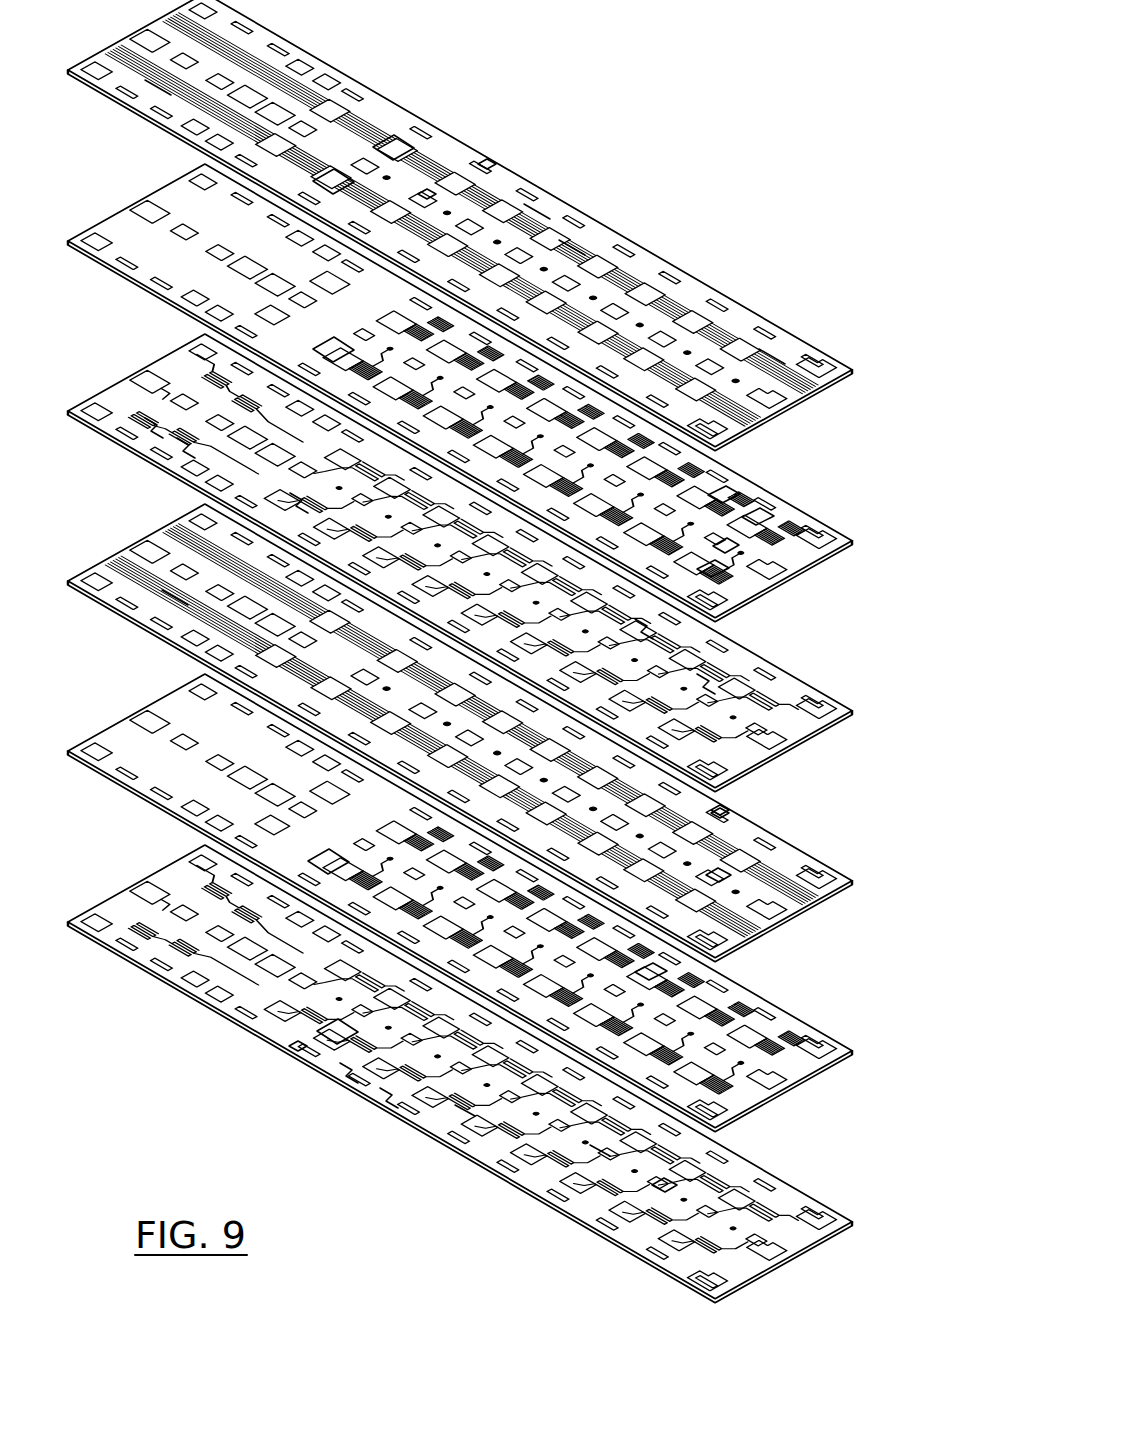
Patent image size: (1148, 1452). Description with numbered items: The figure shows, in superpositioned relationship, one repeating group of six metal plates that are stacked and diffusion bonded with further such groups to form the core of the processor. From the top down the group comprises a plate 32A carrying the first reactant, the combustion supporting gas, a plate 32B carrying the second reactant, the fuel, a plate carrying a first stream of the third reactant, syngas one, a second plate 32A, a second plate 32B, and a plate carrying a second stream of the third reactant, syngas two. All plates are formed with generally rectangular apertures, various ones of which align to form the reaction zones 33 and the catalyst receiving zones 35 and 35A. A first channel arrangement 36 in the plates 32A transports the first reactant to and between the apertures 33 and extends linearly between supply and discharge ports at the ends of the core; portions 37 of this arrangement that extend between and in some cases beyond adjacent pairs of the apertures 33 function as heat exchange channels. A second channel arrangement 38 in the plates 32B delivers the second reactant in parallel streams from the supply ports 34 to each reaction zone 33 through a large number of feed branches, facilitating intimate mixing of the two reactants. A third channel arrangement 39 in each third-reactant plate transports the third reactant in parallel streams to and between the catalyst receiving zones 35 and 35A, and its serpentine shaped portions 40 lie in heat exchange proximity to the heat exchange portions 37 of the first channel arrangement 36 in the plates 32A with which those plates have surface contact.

The plate 32A is at (697, 268).
The plate 32B is at (772, 482).
The apertures defining reaction zones 33 is at (393, 148).
The supply ports 34 is at (725, 548).
The catalyst receiving zones 35 is at (427, 198).
The catalyst receiving zones 35A is at (720, 813).
The first channel arrangement 36 is at (158, 88).
The heat exchange channel portions 37 is at (572, 248).
The second channel arrangement 38 is at (752, 520).
The third channel arrangement 39 is at (300, 497).
The serpentine shaped portions 40 is at (600, 1150).